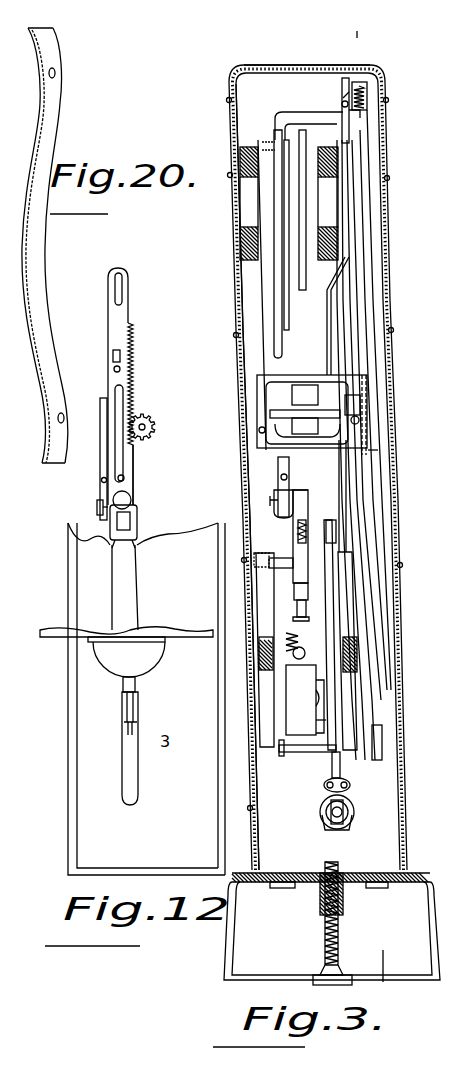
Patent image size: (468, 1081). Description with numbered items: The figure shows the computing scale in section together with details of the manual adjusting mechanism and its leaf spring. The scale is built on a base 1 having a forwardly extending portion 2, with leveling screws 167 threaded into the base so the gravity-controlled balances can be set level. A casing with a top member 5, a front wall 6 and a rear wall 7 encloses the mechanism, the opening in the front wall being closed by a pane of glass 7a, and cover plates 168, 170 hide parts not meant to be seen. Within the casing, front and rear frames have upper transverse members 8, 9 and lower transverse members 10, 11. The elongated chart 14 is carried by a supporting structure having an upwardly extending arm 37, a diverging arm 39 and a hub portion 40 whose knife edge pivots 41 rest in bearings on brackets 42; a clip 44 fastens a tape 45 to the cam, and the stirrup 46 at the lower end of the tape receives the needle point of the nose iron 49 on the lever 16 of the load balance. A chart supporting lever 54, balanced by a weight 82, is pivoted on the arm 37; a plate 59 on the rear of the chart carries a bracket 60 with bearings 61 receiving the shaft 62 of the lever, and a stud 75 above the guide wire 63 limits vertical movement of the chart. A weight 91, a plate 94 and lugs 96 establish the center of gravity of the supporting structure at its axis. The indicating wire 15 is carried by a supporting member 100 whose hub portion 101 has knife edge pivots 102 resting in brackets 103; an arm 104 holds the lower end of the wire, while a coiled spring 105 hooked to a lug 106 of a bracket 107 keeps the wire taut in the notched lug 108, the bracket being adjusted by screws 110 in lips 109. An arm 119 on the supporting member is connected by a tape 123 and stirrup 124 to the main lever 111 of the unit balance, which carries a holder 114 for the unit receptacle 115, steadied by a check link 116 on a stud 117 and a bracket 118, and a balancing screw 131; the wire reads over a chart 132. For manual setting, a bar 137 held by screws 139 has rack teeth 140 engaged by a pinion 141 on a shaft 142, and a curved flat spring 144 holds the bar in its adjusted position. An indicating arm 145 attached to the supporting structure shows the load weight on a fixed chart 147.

In FIG. 3, the base 1 is at (420, 888).
In FIG. 3, the forwardly extending portion 2 is at (369, 508).
In FIG. 3, the top member 5 is at (306, 67).
In FIG. 12, the front wall 6 is at (68, 745).
In FIG. 3, the front wall 6 is at (237, 326).
In FIG. 12, the rear wall 7 is at (225, 745).
In FIG. 3, the rear wall 7 is at (389, 243).
In FIG. 3, the pane of glass 7a is at (386, 313).
In FIG. 3, the upper transverse member 8 is at (240, 251).
In FIG. 3, the upper transverse member 9 is at (318, 245).
In FIG. 3, the lower transverse member 10 is at (259, 662).
In FIG. 3, the lower transverse member 11 is at (358, 650).
In FIG. 3, the chart 14 is at (370, 258).
In FIG. 3, the wire 15 is at (372, 295).
In FIG. 3, the lever 16 is at (350, 810).
In FIG. 3, the upwardly extending arm 37 is at (306, 521).
In FIG. 3, the diverging arm 39 is at (309, 724).
In FIG. 3, the hub portion 40 is at (290, 538).
In FIG. 3, the knife edge pivots 41 is at (269, 564).
In FIG. 3, the brackets 42 is at (263, 622).
In FIG. 3, the clip 44 is at (327, 540).
In FIG. 3, the tape 45 is at (305, 700).
In FIG. 3, the stirrup 46 is at (354, 822).
In FIG. 3, the nose iron 49 is at (331, 820).
In FIG. 3, the chart supporting lever 54 is at (305, 425).
In FIG. 3, the plate 59 is at (370, 383).
In FIG. 3, the bracket 60 is at (312, 402).
In FIG. 3, the bearings 61 is at (258, 432).
In FIG. 3, the shaft 62 is at (268, 413).
In FIG. 3, the guide wire 63 is at (370, 437).
In FIG. 3, the stud 75 is at (362, 405).
In FIG. 3, the weight 82 is at (305, 395).
In FIG. 3, the weight 91 is at (306, 703).
In FIG. 3, the plate 94 is at (294, 596).
In FIG. 3, the lugs 96 is at (298, 632).
In FIG. 3, the supporting member 100 is at (309, 123).
In FIG. 3, the hub portion 101 is at (305, 210).
In FIG. 3, the knife edge pivots 102 is at (318, 154).
In FIG. 3, the brackets 103 is at (250, 204).
In FIG. 3, the arm 104 is at (364, 273).
In FIG. 3, the coiled spring 105 is at (366, 96).
In FIG. 3, the forwardly extending lug 106 is at (366, 86).
In FIG. 3, the bracket 107 is at (347, 80).
In FIG. 3, the second forwardly extending lug 108 is at (358, 113).
In FIG. 3, the rearwardly extending lips 109 is at (342, 104).
In FIG. 3, the screws 110 is at (343, 99).
In FIG. 12, the main lever 111 is at (137, 520).
In FIG. 3, the main lever 111 is at (298, 530).
In FIG. 12, the holder 114 is at (130, 585).
In FIG. 12, the unit receptacle 115 is at (166, 630).
In FIG. 3, the check link 116 is at (300, 752).
In FIG. 12, the stud 117 is at (135, 686).
In FIG. 3, the bracket 118 is at (278, 758).
In FIG. 3, the arm 119 is at (267, 143).
In FIG. 12, the tape 123 is at (100, 460).
In FIG. 3, the tape 123 is at (281, 350).
In FIG. 12, the stirrup 124 is at (98, 504).
In FIG. 3, the stirrup 124 is at (279, 490).
In FIG. 12, the screw 131 is at (131, 500).
In FIG. 3, the chart 132 is at (375, 745).
In FIG. 12, the bar 137 is at (134, 467).
In FIG. 12, the screws 139 is at (114, 369).
In FIG. 12, the rack teeth 140 is at (130, 400).
In FIG. 12, the pinion 141 is at (150, 417).
In FIG. 12, the short shaft 142 is at (146, 427).
In FIG. 20, the flat spring 144 is at (50, 330).
In FIG. 12, the flat spring 144 is at (113, 356).
In FIG. 3, the indicating arm 145 is at (350, 160).
In FIG. 3, the fixed chart 147 is at (352, 178).
In FIG. 3, the leveling screws 167 is at (339, 949).
In FIG. 3, the cover plate 168 is at (355, 345).
In FIG. 3, the cover plate 170 is at (362, 490).